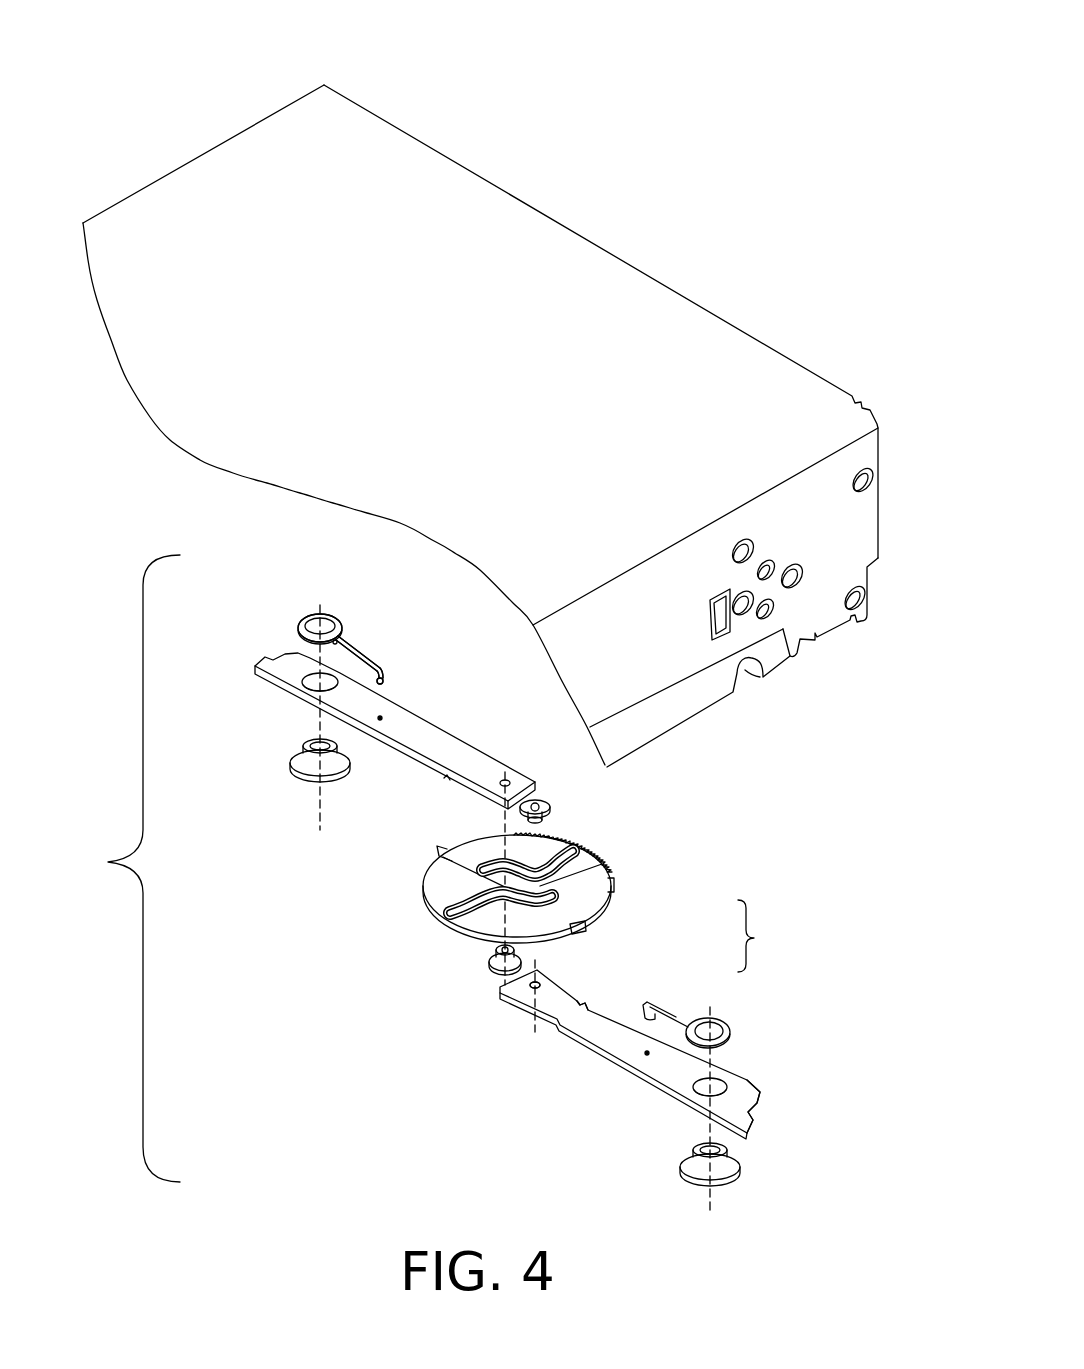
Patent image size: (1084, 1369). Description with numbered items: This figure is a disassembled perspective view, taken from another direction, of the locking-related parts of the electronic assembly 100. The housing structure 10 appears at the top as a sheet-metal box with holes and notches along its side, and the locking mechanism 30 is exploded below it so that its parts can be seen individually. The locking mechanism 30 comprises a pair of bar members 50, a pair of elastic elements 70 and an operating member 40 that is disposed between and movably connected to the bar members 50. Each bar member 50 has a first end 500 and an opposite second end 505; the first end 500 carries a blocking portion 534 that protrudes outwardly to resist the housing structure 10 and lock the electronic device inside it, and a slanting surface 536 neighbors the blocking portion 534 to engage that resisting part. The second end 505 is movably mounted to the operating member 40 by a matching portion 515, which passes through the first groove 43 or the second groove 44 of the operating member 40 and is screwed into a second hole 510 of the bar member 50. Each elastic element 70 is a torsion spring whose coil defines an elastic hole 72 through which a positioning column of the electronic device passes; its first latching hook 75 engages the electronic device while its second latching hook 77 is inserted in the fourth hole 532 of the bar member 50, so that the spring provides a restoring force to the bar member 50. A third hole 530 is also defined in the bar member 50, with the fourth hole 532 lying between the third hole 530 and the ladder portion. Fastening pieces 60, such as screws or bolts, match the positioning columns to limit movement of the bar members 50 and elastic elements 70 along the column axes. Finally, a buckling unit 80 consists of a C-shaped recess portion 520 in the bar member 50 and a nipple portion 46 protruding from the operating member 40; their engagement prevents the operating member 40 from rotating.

The electronic assembly 100 is at (478, 31).
The housing structure 10 is at (727, 355).
The locking mechanism 30 is at (120, 868).
The operating member 40 is at (512, 904).
The first groove 43 is at (482, 871).
The second groove 44 is at (443, 915).
The nipple portion 46 is at (598, 930).
The bar member 50 is at (362, 697).
The fastening piece 60 is at (313, 773).
The elastic element 70 is at (310, 604).
The elastic hole 72 is at (325, 620).
The first latching hook 75 is at (337, 640).
The second latching hook 77 is at (384, 680).
The buckling unit 80 is at (764, 936).
The first end 500 is at (683, 1065).
The second end 505 is at (550, 1000).
The second hole 510 is at (507, 780).
The matching portion 515 is at (550, 808).
The recess portion 520 is at (581, 1003).
The third hole 530 is at (318, 687).
The fourth hole 532 is at (381, 717).
The blocking portion 534 is at (753, 1125).
The slanting surface 536 is at (761, 1089).